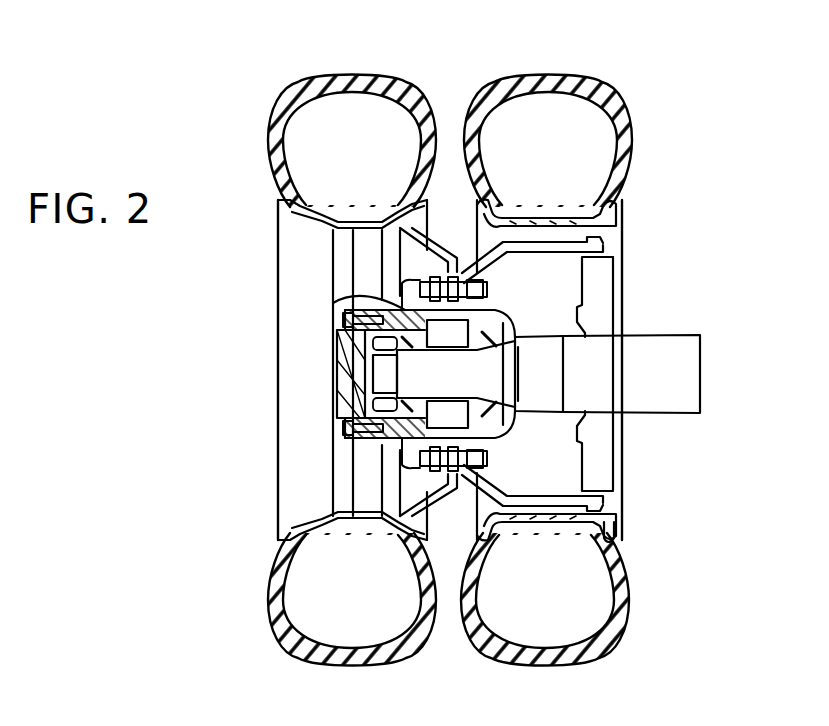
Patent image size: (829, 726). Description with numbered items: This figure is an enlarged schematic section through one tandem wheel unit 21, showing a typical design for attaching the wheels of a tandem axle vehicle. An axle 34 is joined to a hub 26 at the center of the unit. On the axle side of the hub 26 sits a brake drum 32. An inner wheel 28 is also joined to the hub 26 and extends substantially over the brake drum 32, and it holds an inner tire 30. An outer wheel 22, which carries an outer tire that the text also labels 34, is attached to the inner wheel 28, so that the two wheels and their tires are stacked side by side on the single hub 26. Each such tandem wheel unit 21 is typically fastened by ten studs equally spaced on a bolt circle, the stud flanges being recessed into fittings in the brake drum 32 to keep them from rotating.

The tandem wheel unit 21 is at (252, 477).
The outer wheel 22 is at (276, 226).
The hub 26 is at (372, 297).
The inner wheel 28 is at (614, 536).
The inner tire 30 is at (612, 100).
The brake drum 32 is at (603, 247).
The axle 34 is at (292, 100).